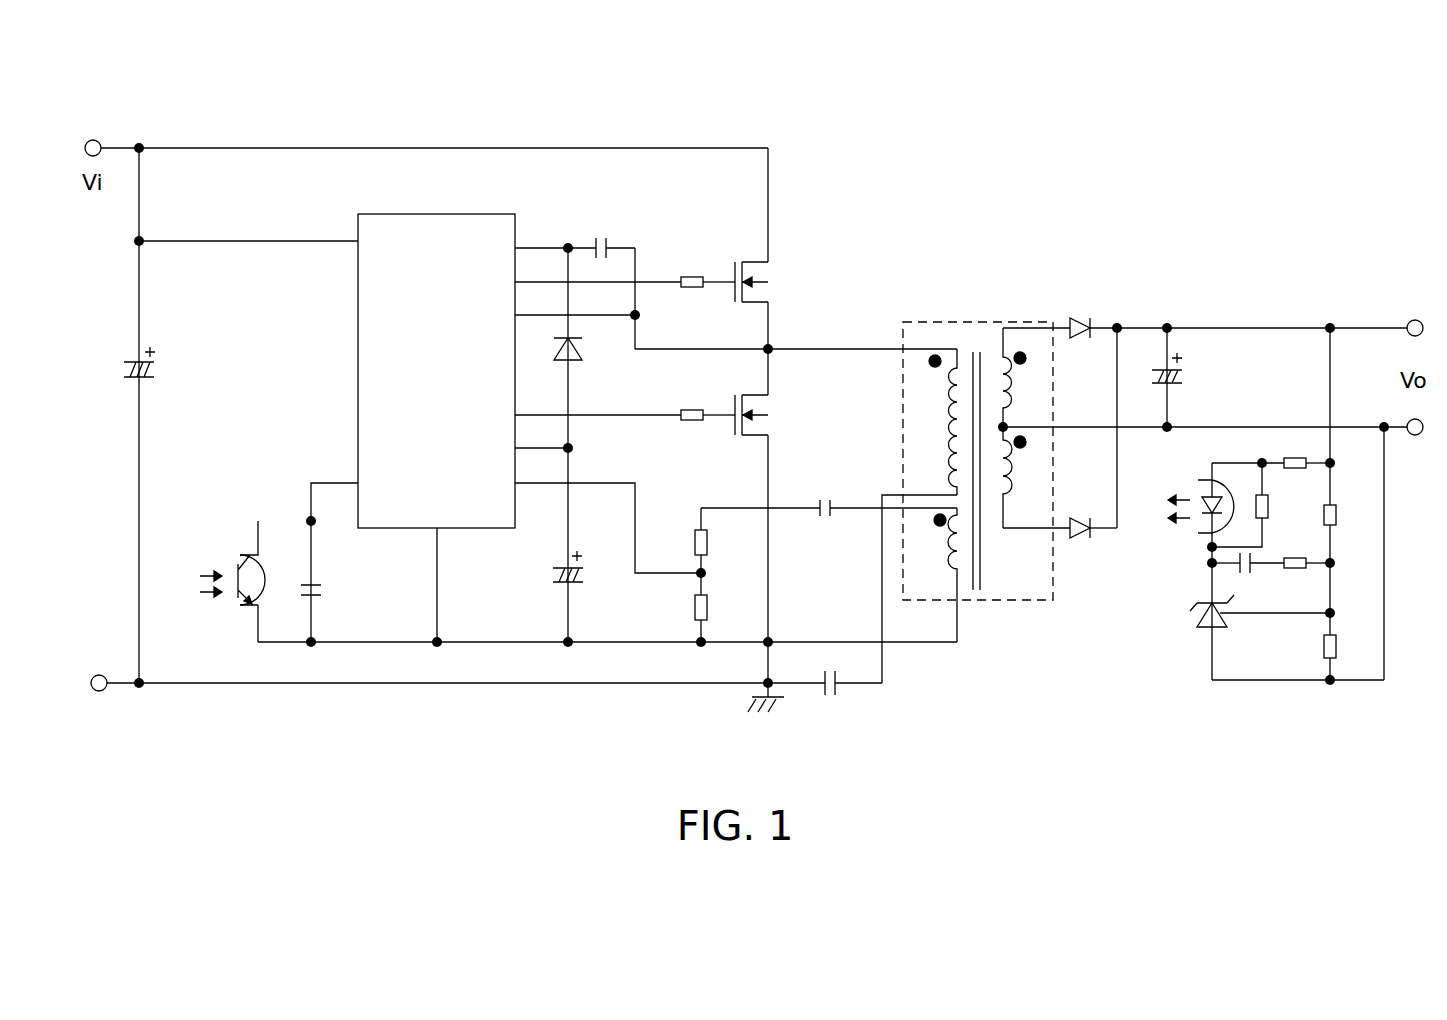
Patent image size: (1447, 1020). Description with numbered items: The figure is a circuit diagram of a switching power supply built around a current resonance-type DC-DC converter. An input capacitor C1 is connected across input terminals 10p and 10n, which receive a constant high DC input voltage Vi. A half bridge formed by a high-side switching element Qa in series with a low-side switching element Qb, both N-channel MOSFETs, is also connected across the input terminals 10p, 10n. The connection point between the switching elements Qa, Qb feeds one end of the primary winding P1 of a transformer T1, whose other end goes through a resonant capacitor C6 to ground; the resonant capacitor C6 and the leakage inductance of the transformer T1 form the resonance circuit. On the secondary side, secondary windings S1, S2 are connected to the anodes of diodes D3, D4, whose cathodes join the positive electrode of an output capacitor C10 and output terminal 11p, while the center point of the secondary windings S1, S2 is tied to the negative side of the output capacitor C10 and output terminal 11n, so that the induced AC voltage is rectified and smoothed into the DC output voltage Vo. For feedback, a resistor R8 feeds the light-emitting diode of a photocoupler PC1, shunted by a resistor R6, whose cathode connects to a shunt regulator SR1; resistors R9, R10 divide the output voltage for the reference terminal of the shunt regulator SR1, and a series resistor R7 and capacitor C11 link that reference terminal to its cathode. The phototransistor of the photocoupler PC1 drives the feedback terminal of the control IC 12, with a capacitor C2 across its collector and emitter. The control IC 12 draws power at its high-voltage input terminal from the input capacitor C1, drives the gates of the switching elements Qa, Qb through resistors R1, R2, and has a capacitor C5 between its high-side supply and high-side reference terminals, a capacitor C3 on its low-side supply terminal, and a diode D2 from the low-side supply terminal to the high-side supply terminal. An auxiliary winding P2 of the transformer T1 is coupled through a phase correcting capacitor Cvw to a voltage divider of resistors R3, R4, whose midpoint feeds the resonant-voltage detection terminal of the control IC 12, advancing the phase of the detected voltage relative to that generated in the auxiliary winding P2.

The input terminal 10p is at (96, 138).
The input terminal 10n is at (98, 673).
The output terminal 11p is at (1415, 318).
The output terminal 11n is at (1416, 437).
The control IC 12 is at (408, 214).
The input capacitor C1 is at (155, 366).
The capacitor C2 is at (328, 592).
The capacitor C3 is at (546, 570).
The capacitor C5 is at (575, 234).
The resonant capacitor C6 is at (804, 699).
The phase correcting capacitor Cvw is at (823, 494).
The output capacitor C10 is at (1190, 373).
The capacitor C11 is at (1263, 580).
The diode D2 is at (585, 445).
The diode D3 is at (1079, 314).
The diode D4 is at (1079, 545).
The resistor R1 is at (691, 268).
The resistor R2 is at (691, 401).
The resistor R3 is at (718, 543).
The resistor R4 is at (718, 608).
The resistor R6 is at (1257, 505).
The resistor R7 is at (1294, 549).
The resistor R8 is at (1294, 449).
The resistor R9 is at (1347, 517).
The resistor R10 is at (1302, 650).
The high-side switching element Qa is at (772, 282).
The low-side switching element Qb is at (772, 415).
The photocoupler PC1 is at (713, 569).
The shunt regulator SR1 is at (1183, 617).
The transformer T1 is at (978, 467).
The primary winding P1 is at (933, 422).
The auxiliary winding P2 is at (932, 575).
The secondary winding S1 is at (1023, 377).
The secondary winding S2 is at (1023, 477).